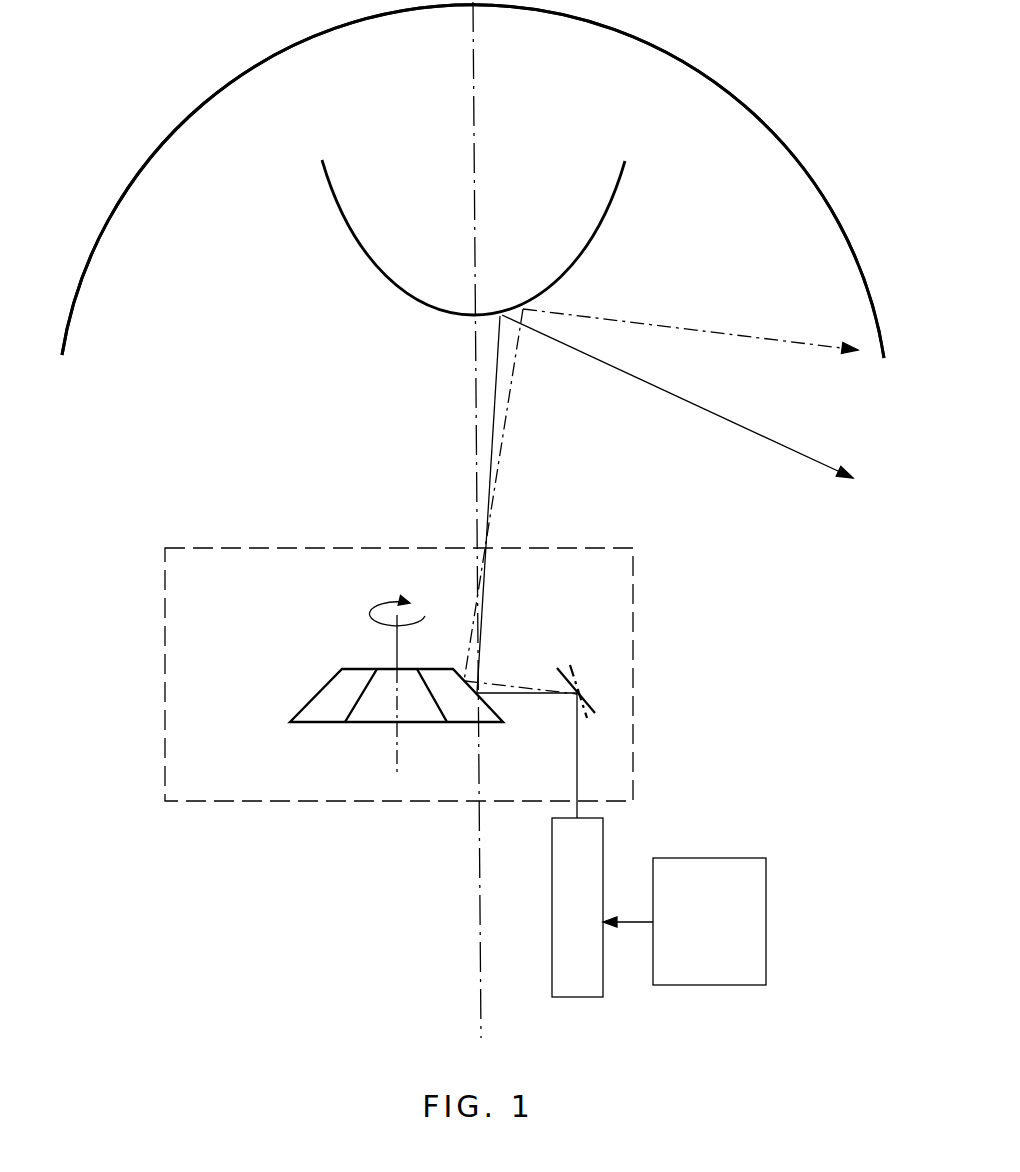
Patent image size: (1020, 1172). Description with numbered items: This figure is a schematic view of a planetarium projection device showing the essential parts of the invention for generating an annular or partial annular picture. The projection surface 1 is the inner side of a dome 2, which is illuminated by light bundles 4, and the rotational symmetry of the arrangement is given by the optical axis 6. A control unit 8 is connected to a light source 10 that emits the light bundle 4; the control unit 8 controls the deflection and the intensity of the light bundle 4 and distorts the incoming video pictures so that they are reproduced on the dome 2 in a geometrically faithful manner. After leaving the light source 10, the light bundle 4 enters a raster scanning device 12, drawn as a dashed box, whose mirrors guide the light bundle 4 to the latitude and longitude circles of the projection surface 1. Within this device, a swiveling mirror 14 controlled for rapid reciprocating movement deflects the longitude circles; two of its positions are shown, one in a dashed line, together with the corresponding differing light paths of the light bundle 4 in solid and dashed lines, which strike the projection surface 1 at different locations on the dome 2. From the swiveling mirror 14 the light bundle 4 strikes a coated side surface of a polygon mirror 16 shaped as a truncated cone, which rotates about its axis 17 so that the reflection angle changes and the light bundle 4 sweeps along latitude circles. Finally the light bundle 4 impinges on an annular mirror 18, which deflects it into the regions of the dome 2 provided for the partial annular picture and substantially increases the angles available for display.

The projection surface 1 is at (660, 48).
The dome 2 is at (720, 80).
The light bundle 4 is at (648, 321).
The optical axis 6 is at (473, 106).
The control unit 8 is at (748, 866).
The light source 10 is at (590, 838).
The raster scanning device 12 is at (617, 582).
The swiveling mirror 14 is at (580, 695).
The polygon mirror 16 is at (307, 697).
The axis 17 is at (397, 746).
The annular mirror 18 is at (358, 248).